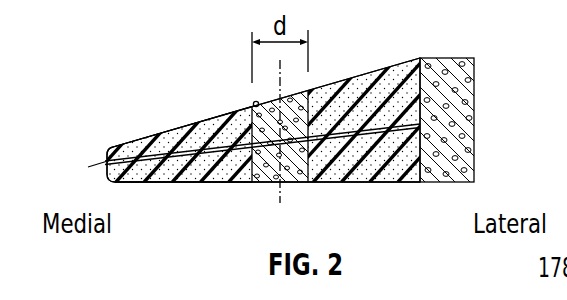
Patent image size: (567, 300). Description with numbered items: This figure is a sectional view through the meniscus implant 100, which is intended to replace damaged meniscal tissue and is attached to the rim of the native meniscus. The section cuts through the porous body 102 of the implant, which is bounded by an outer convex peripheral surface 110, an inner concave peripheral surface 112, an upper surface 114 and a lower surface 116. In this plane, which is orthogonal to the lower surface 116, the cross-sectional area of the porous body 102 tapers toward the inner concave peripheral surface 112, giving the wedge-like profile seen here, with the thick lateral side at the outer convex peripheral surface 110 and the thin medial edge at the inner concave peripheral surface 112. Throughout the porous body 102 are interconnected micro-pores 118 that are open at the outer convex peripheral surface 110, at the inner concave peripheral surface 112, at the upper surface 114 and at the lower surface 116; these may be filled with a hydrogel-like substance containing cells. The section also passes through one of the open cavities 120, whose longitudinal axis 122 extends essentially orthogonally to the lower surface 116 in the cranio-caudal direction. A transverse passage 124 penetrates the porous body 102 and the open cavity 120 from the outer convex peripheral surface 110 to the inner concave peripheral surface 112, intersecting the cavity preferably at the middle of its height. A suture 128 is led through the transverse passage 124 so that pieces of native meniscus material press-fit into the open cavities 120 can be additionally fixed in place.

The meniscus implant 100 is at (128, 58).
The porous body 102 is at (213, 112).
The outer convex peripheral surface 110 is at (428, 66).
The inner concave peripheral surface 112 is at (107, 176).
The upper surface 114 is at (352, 78).
The lower surface 116 is at (240, 184).
The interconnected micro-pores 118 is at (184, 185).
The open cavities 120 is at (254, 102).
The longitudinal axis 122 is at (280, 188).
The transverse passages 124 is at (162, 142).
The suture 128 is at (102, 163).